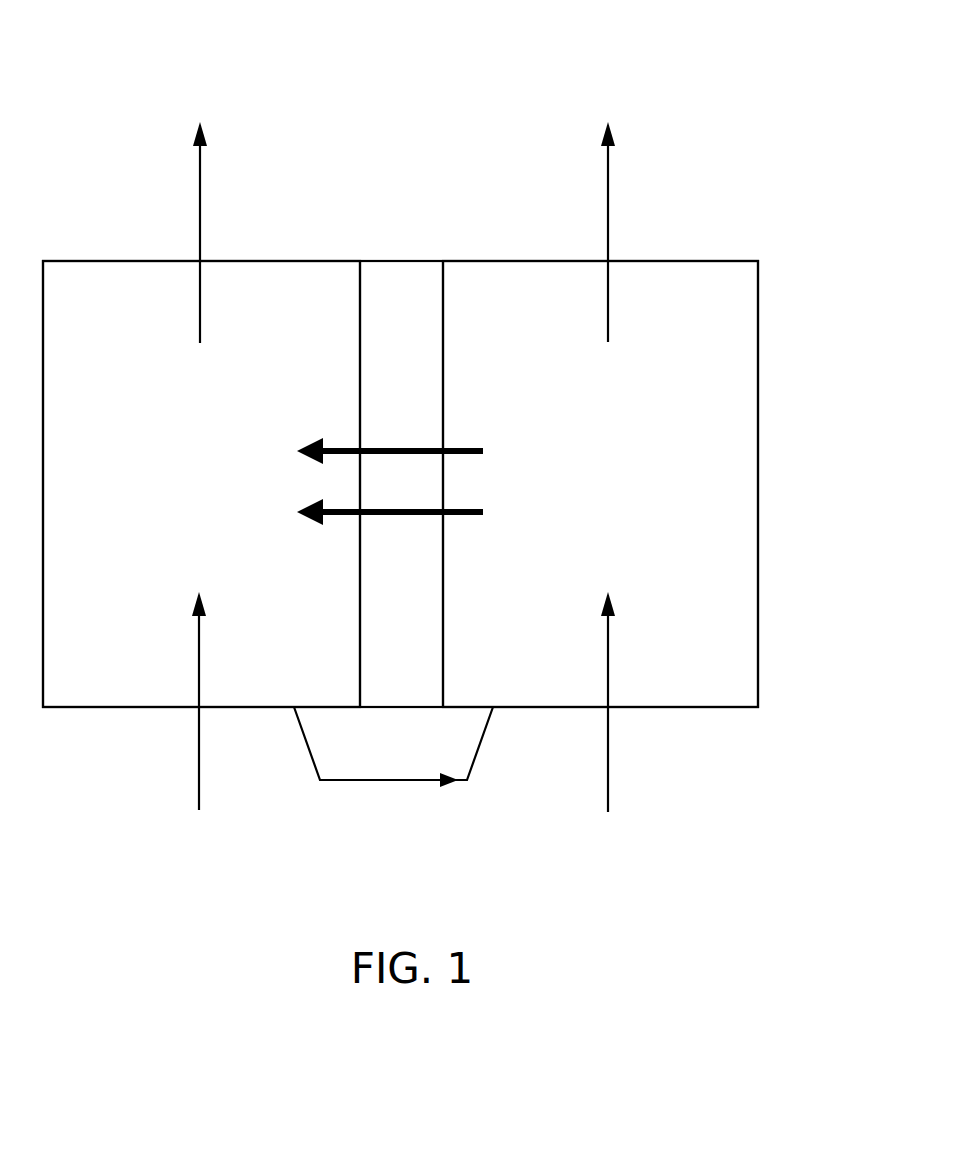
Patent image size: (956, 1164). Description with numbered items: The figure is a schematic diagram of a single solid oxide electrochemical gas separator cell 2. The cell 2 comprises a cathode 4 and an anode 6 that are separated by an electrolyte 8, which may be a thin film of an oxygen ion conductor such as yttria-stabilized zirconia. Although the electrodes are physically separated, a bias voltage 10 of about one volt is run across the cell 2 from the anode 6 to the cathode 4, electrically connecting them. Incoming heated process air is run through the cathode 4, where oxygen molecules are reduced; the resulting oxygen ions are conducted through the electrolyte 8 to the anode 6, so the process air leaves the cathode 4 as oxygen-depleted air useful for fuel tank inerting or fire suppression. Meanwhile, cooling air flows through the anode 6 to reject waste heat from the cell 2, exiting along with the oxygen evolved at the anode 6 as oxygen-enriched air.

The solid oxide electrochemical gas separator cell 2 is at (747, 131).
The cathode 4 is at (666, 341).
The anode 6 is at (81, 329).
The electrolyte 8 is at (387, 277).
The bias voltage 10 is at (408, 782).